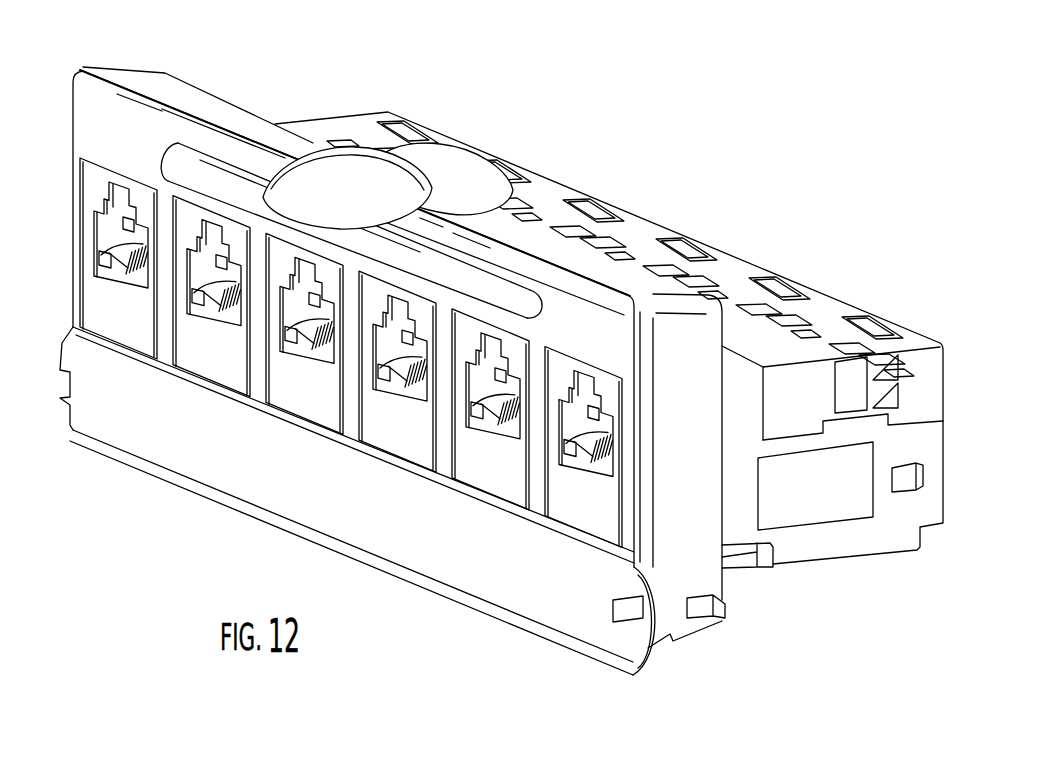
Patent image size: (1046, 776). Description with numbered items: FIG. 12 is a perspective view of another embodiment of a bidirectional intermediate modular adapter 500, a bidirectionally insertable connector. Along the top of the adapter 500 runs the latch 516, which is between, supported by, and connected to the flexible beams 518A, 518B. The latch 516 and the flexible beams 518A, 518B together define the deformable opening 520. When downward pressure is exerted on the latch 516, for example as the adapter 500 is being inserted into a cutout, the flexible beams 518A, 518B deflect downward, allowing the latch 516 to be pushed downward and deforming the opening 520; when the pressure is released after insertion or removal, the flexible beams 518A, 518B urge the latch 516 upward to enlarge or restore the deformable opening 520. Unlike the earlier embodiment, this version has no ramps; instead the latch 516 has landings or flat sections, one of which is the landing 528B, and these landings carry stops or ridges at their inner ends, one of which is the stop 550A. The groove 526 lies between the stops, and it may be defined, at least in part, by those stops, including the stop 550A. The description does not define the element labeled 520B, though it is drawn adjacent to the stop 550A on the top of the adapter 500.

The bidirectional intermediate modular adapter 500 is at (167, 531).
The latch 516 is at (359, 123).
The flexible beam 518A is at (281, 128).
The flexible beam 518B is at (513, 220).
The deformable opening 520 is at (232, 172).
The second latch member 520B is at (406, 158).
The groove 526 is at (470, 180).
The landing 528B is at (470, 170).
The stop 550A is at (316, 152).